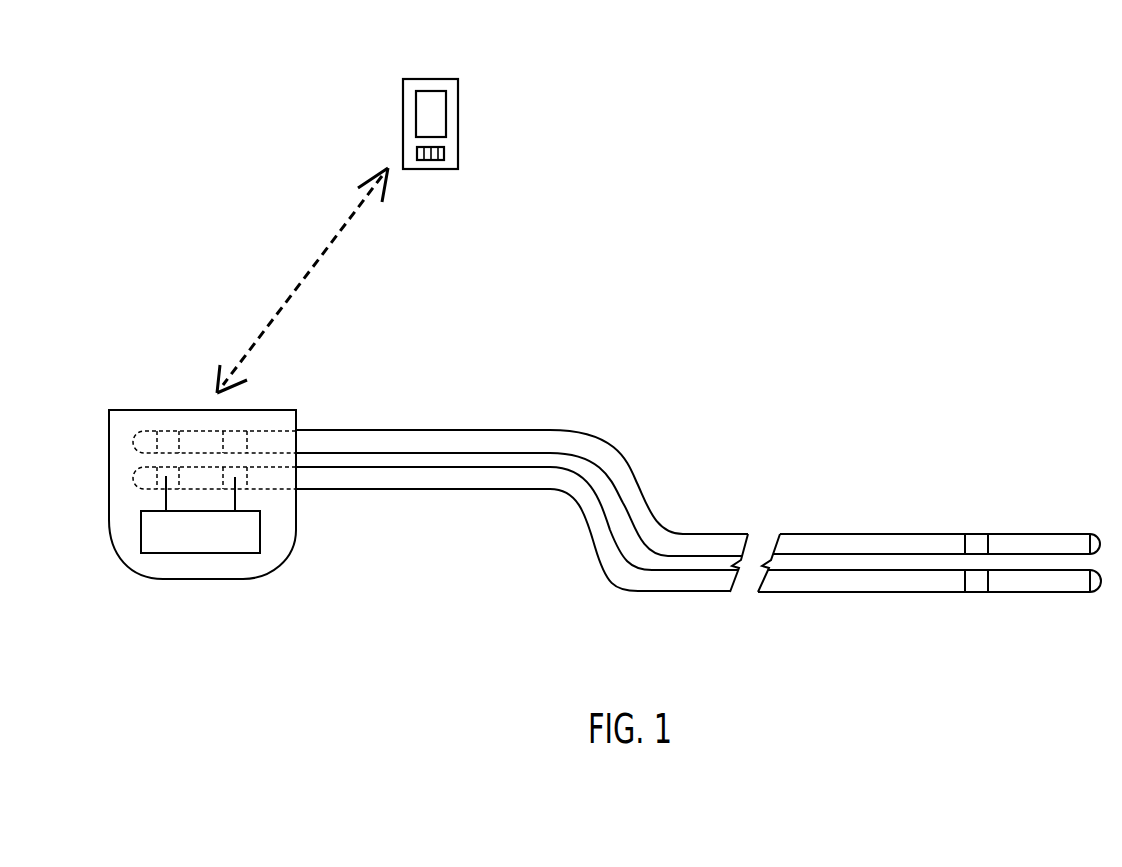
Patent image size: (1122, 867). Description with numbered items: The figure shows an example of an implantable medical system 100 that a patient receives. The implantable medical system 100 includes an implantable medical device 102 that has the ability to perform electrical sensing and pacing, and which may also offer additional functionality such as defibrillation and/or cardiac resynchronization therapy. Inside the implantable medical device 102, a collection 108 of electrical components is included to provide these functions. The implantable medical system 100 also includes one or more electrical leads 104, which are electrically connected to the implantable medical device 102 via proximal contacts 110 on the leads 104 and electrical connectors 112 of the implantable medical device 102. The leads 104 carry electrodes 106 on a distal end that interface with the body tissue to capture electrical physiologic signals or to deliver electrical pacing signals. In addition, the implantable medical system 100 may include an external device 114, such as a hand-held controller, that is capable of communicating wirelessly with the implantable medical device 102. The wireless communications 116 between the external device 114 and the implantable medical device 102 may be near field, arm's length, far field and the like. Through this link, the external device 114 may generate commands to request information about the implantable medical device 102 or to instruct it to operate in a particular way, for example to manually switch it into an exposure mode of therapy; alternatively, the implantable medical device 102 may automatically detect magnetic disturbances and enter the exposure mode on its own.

The implantable medical system 100 is at (461, 362).
The implantable medical device 102 is at (273, 544).
The electrical leads 104 is at (612, 438).
The electrodes 106 is at (1093, 534).
The collection of electrical components 108 is at (260, 527).
The proximal contacts 110 is at (157, 472).
The electrical connectors 112 is at (165, 477).
The external device 114 is at (458, 122).
The wireless communications 116 is at (300, 286).